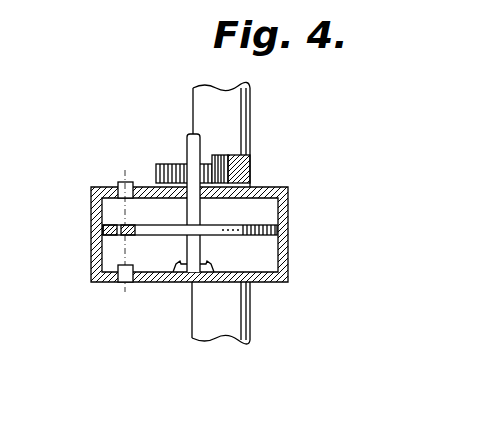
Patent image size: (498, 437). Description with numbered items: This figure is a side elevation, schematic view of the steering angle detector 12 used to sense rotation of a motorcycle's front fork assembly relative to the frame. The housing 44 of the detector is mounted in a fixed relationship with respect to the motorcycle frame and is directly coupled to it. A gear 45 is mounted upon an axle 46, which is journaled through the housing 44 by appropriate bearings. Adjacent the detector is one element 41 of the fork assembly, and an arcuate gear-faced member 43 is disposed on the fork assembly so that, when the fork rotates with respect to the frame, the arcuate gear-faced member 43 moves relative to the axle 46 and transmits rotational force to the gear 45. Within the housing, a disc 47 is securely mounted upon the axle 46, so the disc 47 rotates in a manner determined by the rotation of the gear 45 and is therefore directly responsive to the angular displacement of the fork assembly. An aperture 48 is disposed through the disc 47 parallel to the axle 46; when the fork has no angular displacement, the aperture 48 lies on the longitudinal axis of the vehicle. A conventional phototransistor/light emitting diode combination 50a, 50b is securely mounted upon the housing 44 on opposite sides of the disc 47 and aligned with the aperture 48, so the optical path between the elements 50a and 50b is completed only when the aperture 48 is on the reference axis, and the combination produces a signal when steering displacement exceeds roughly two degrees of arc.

The steering angle detector 12 is at (121, 118).
The fork assembly element 41 is at (243, 118).
The arcuate gear-faced member 43 is at (248, 167).
The housing 44 is at (163, 276).
The gear 45 is at (169, 164).
The axle 46 is at (198, 247).
The disc 47 is at (140, 222).
The aperture 48 is at (112, 240).
The phototransistor/light emitting diode combination element 50a is at (117, 186).
The phototransistor/light emitting diode combination element 50b is at (103, 277).